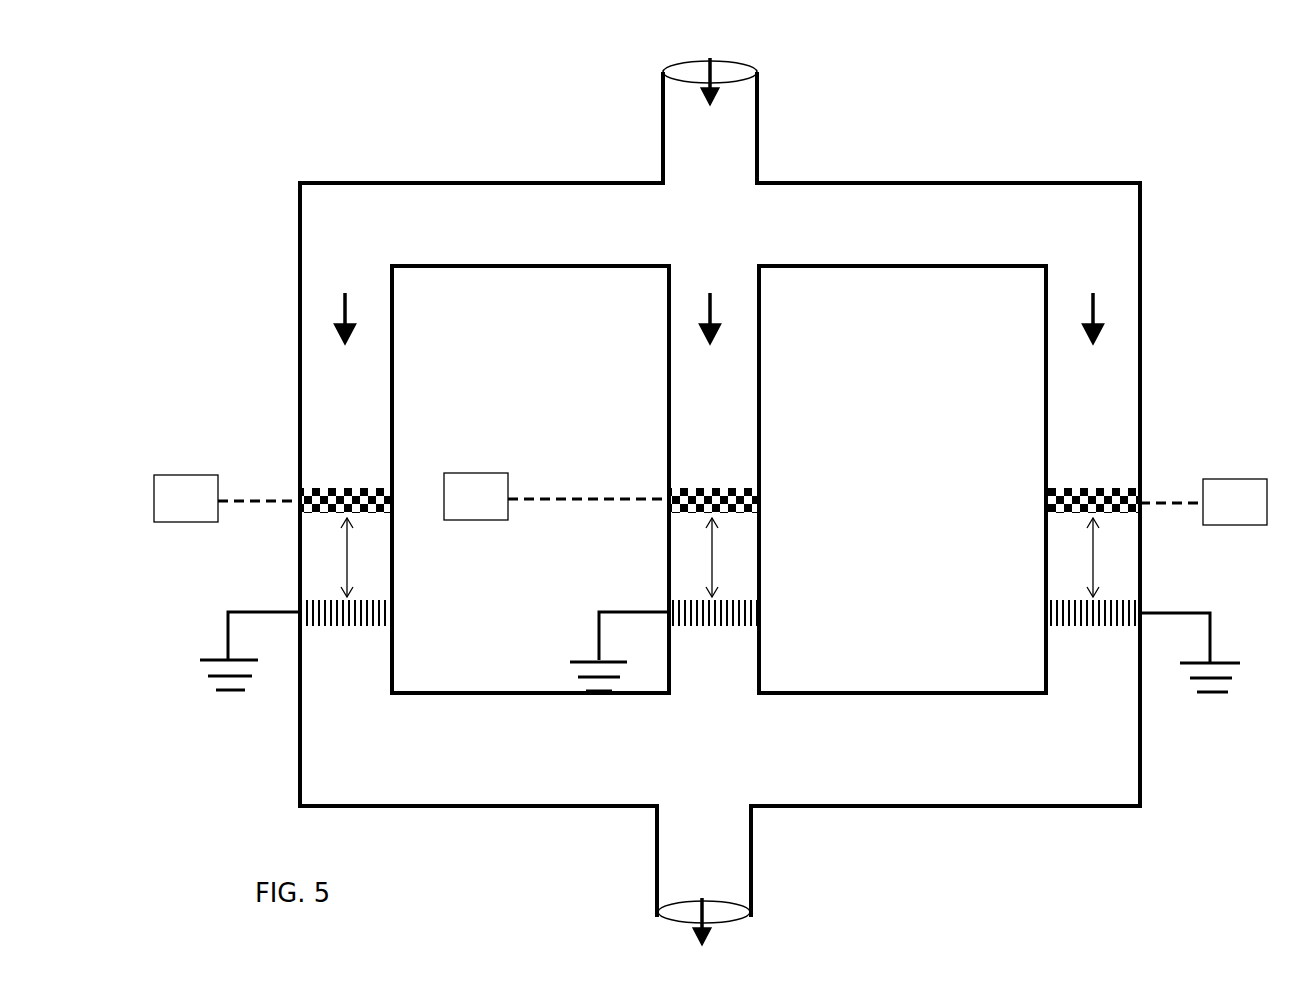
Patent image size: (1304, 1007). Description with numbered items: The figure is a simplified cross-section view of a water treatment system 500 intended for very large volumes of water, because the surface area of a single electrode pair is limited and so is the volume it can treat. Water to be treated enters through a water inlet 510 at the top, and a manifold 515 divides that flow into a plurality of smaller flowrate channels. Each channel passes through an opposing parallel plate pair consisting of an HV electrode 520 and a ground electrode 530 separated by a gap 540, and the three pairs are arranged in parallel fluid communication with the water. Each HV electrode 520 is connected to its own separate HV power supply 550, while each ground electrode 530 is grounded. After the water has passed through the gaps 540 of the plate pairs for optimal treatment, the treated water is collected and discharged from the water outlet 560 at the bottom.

The water treatment system 500 is at (342, 96).
The water inlet 510 is at (760, 148).
The manifold 515 is at (461, 182).
The HV electrode 520 is at (343, 488).
The ground electrode 530 is at (393, 613).
The gap 540 is at (347, 555).
The HV power supply 550 is at (190, 473).
The water outlet 560 is at (752, 870).